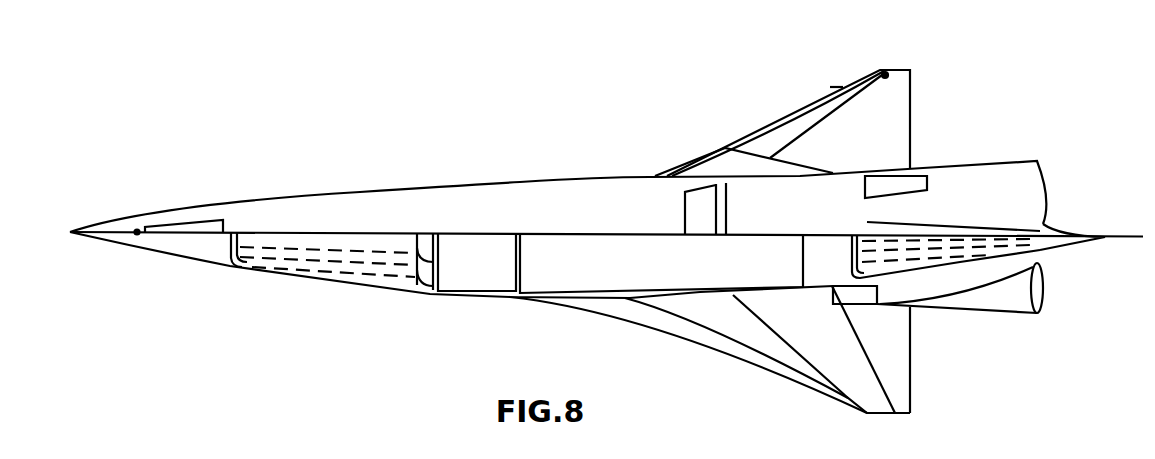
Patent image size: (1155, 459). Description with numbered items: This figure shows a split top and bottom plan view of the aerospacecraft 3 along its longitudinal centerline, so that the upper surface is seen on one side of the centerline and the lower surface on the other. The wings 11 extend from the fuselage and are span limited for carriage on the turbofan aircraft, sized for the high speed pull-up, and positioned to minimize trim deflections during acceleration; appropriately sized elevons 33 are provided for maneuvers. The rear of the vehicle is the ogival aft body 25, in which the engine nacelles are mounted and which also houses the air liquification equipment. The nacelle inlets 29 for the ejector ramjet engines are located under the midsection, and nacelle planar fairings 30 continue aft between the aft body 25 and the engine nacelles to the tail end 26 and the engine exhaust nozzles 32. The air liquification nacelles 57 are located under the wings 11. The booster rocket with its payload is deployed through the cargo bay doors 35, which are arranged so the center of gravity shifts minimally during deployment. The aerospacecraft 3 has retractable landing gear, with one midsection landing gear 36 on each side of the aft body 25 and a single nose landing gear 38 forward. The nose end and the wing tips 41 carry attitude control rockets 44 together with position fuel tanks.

The aerospacecraft 3 is at (262, 190).
The wings 11 is at (733, 347).
The aft body 25 is at (960, 263).
The tail end 26 is at (1053, 218).
The nacelle inlet 29 is at (685, 217).
The nacelle planar fairings 30 is at (715, 185).
The engine exhaust nozzles 32 is at (1043, 283).
The elevons 33 is at (912, 353).
The cargo bay doors 35 is at (565, 286).
The midsection landing gear 36 is at (907, 176).
The nose landing gear 38 is at (190, 228).
The wing tips 41 is at (880, 72).
The attitude control rockets 44 is at (136, 236).
The air liquification nacelles 57 is at (752, 172).